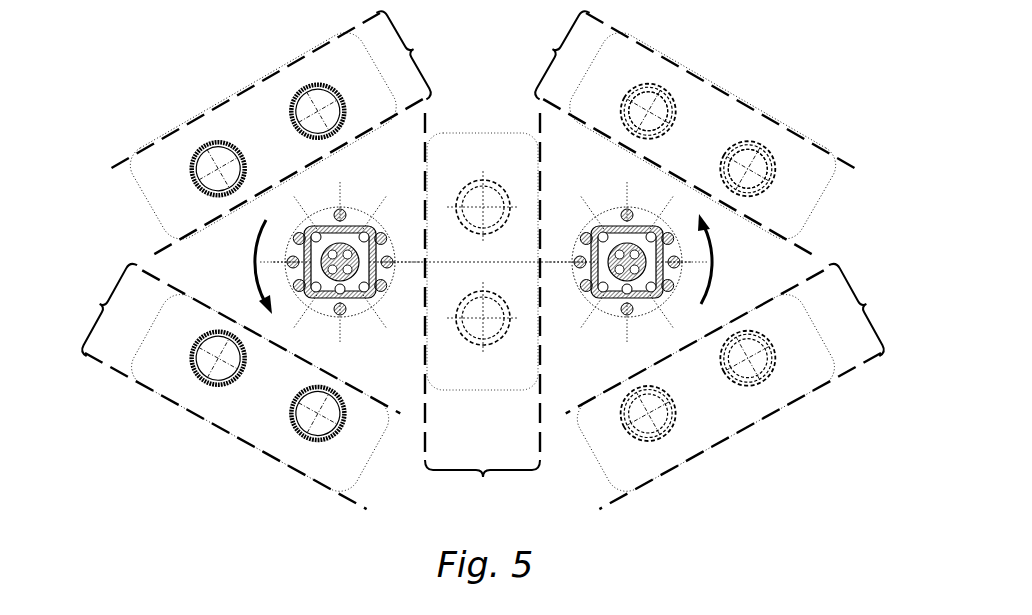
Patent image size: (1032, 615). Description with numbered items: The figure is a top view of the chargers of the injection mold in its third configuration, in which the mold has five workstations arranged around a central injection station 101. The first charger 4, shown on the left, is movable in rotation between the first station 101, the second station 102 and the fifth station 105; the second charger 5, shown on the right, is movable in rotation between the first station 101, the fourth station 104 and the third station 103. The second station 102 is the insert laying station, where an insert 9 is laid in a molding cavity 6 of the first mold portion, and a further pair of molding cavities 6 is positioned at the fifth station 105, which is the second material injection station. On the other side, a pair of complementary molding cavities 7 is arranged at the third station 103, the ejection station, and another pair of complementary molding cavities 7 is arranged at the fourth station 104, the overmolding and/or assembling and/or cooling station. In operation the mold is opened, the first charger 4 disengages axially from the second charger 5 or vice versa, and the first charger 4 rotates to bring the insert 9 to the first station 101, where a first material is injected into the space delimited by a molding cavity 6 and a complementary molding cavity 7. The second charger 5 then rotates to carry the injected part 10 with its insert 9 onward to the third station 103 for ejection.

The first movable charger 4 is at (224, 467).
The second movable charger 5 is at (762, 458).
The molding cavity 6 is at (218, 167).
The complementary molding cavity 7 is at (673, 99).
The insert 9 is at (193, 158).
The injected part 10 is at (648, 111).
The first station 101 is at (482, 309).
The second station 102 is at (276, 131).
The third station 103 is at (689, 131).
The fourth station 104 is at (725, 384).
The fifth station 105 is at (240, 384).